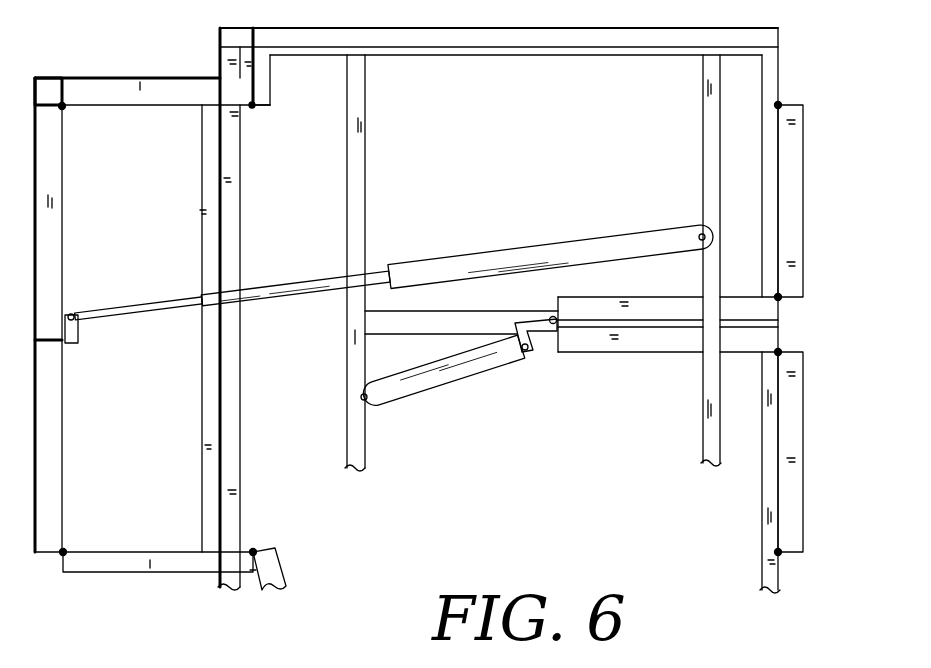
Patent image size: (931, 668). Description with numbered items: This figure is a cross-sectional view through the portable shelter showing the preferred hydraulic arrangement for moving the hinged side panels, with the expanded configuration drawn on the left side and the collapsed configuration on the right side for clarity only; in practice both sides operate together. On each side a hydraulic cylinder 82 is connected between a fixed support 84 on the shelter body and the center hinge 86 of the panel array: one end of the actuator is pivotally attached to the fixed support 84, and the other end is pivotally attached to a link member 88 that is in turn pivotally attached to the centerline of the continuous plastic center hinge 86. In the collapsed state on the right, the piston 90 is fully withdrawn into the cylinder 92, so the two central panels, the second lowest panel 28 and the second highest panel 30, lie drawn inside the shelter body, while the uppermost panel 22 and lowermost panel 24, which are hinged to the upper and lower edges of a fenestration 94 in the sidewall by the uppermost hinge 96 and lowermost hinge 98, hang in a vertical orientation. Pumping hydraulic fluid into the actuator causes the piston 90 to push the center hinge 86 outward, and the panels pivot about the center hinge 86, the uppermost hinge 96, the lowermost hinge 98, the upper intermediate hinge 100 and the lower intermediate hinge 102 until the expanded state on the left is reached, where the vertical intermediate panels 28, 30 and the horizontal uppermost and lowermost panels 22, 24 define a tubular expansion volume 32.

The uppermost panel 22 is at (142, 96).
The lowermost panel 24 is at (158, 563).
The second lowest panel 28 is at (50, 450).
The second highest panel 30 is at (50, 255).
The tubular expansion volume 32 is at (186, 418).
The hydraulic cylinder 82 is at (557, 228).
The fixed support 84 is at (355, 189).
The center hinge 86 is at (40, 336).
The link member 88 is at (75, 330).
The piston 90 is at (420, 273).
The cylinder 92 is at (603, 243).
The fenestration 94 is at (314, 175).
The uppermost hinge 96 is at (252, 106).
The lowermost hinge 98 is at (253, 552).
The upper intermediate hinge 100 is at (62, 106).
The lower intermediate hinge 102 is at (115, 537).